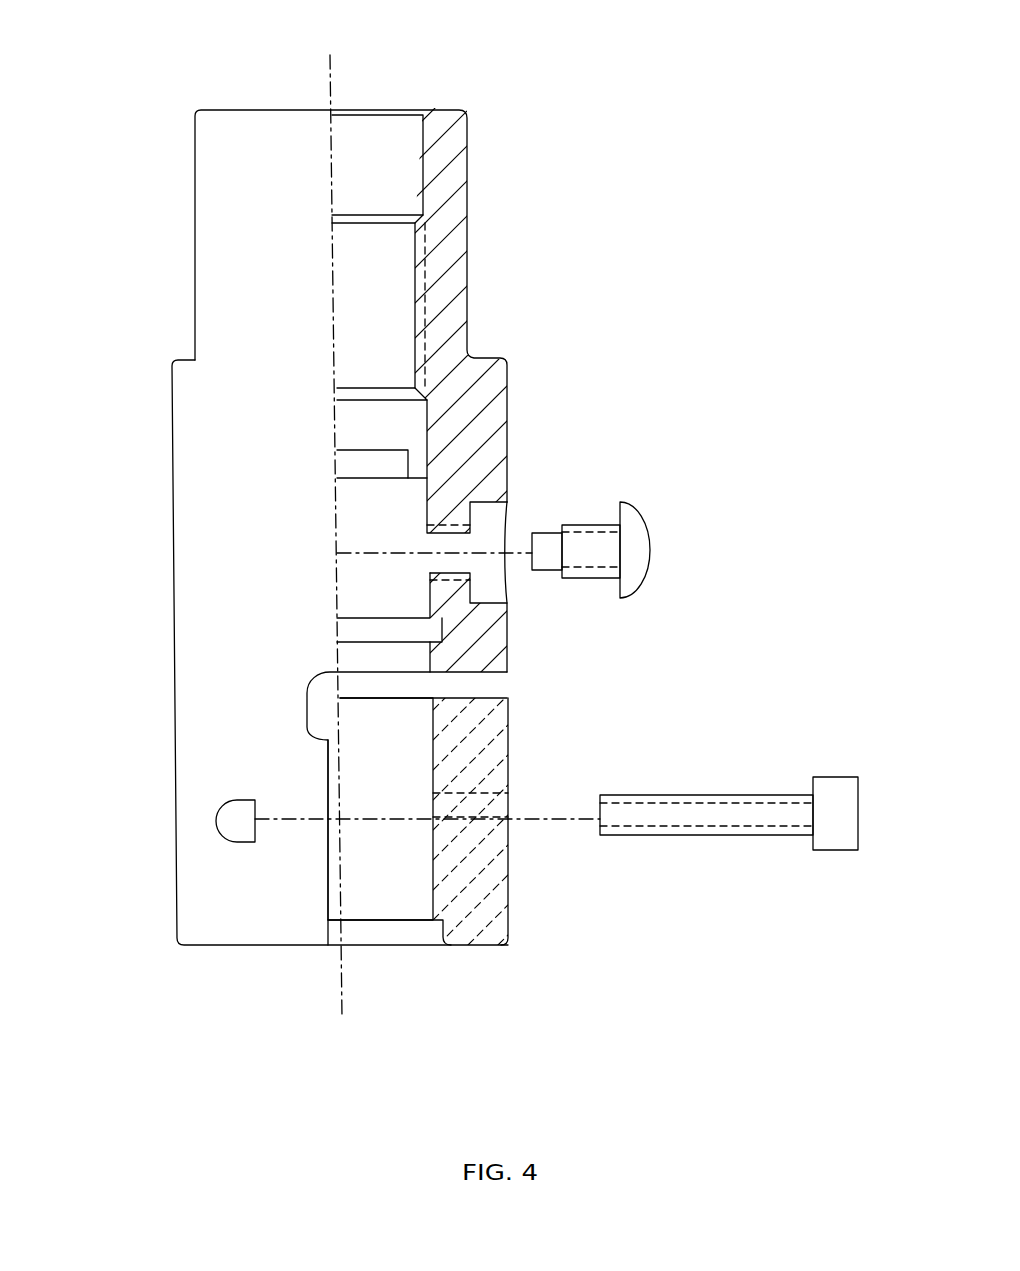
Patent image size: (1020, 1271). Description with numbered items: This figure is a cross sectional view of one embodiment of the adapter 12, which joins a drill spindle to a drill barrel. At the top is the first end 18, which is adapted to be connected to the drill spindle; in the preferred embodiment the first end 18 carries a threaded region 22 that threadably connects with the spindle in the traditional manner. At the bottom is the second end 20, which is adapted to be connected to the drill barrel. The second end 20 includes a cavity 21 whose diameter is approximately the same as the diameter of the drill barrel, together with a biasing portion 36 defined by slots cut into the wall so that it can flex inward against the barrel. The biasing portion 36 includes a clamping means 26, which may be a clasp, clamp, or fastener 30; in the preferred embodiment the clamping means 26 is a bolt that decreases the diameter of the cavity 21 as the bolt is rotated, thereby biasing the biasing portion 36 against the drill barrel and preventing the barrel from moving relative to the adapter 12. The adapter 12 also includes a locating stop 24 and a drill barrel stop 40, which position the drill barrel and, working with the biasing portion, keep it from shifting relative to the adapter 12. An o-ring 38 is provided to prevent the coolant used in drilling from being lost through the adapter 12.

The adapter 12 is at (396, 567).
The first end 18 is at (403, 107).
The second end 20 is at (400, 946).
The cavity 21 is at (385, 780).
The threaded region 22 is at (388, 317).
The locating stop 24 is at (652, 547).
The clamping means 26 is at (148, 727).
The fastener 30 is at (845, 777).
The biasing portion 36 is at (521, 945).
The o-ring 38 is at (508, 623).
The drill barrel stop 40 is at (417, 478).